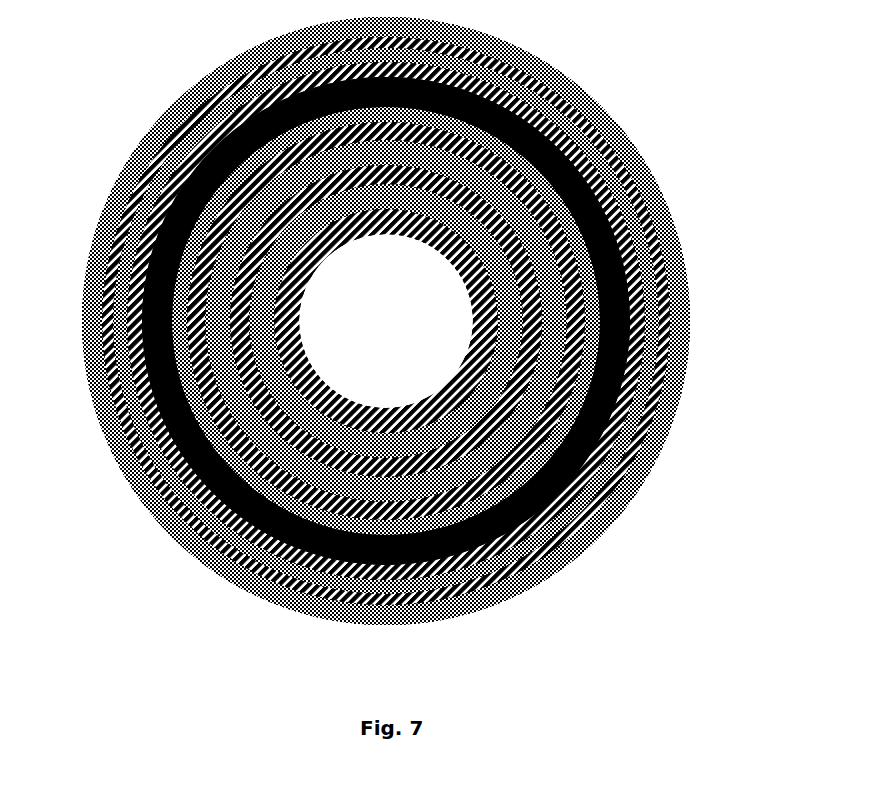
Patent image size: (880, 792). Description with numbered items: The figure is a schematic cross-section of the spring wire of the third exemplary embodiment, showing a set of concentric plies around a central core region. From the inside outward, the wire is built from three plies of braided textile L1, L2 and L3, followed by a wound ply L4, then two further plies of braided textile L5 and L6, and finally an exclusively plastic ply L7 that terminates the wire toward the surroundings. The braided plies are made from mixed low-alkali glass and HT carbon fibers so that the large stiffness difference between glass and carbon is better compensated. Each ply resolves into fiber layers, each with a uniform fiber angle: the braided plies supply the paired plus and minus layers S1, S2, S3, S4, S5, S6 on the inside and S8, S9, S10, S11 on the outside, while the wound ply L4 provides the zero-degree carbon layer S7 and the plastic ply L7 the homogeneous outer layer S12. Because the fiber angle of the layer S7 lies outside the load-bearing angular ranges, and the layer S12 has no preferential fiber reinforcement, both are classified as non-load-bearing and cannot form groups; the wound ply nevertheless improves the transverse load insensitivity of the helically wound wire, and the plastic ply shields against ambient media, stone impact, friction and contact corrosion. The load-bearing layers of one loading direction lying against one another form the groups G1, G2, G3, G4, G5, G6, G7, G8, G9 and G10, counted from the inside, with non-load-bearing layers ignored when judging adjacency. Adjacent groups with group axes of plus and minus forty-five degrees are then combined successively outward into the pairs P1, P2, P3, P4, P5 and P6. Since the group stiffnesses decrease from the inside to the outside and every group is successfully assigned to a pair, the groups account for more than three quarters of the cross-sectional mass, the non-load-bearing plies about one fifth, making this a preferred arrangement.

The first ply of braided textile L1 is at (370, 215).
The second ply of braided textile L2 is at (300, 225).
The third ply of braided textile L3 is at (262, 238).
The wound ply L4 is at (222, 252).
The fifth ply of braided textile L5 is at (200, 280).
The sixth ply of braided textile L6 is at (128, 322).
The plastic ply L7 is at (110, 360).
The first pair P1 is at (265, 322).
The second pair P2 is at (250, 367).
The third pair P3 is at (228, 423).
The fourth pair P4 is at (215, 472).
The fifth pair P5 is at (338, 321).
The sixth pair P6 is at (352, 321).
The first layer S1 is at (430, 225).
The second layer S2 is at (468, 236).
The third layer S3 is at (515, 240).
The fourth layer S4 is at (548, 250).
The fifth layer S5 is at (575, 262).
The sixth layer S6 is at (592, 272).
The seventh layer S7 is at (608, 310).
The eighth layer S8 is at (642, 330).
The ninth layer S9 is at (650, 350).
The tenth layer S10 is at (660, 372).
The eleventh layer S11 is at (665, 402).
The twelfth layer S12 is at (663, 440).
The first group G1 is at (335, 413).
The second group G2 is at (358, 443).
The third group G3 is at (377, 467).
The fourth group G4 is at (397, 495).
The fifth group G5 is at (418, 503).
The sixth group G6 is at (438, 522).
The seventh group G7 is at (467, 562).
The eighth group G8 is at (490, 568).
The ninth group G9 is at (508, 572).
The tenth group G10 is at (538, 575).